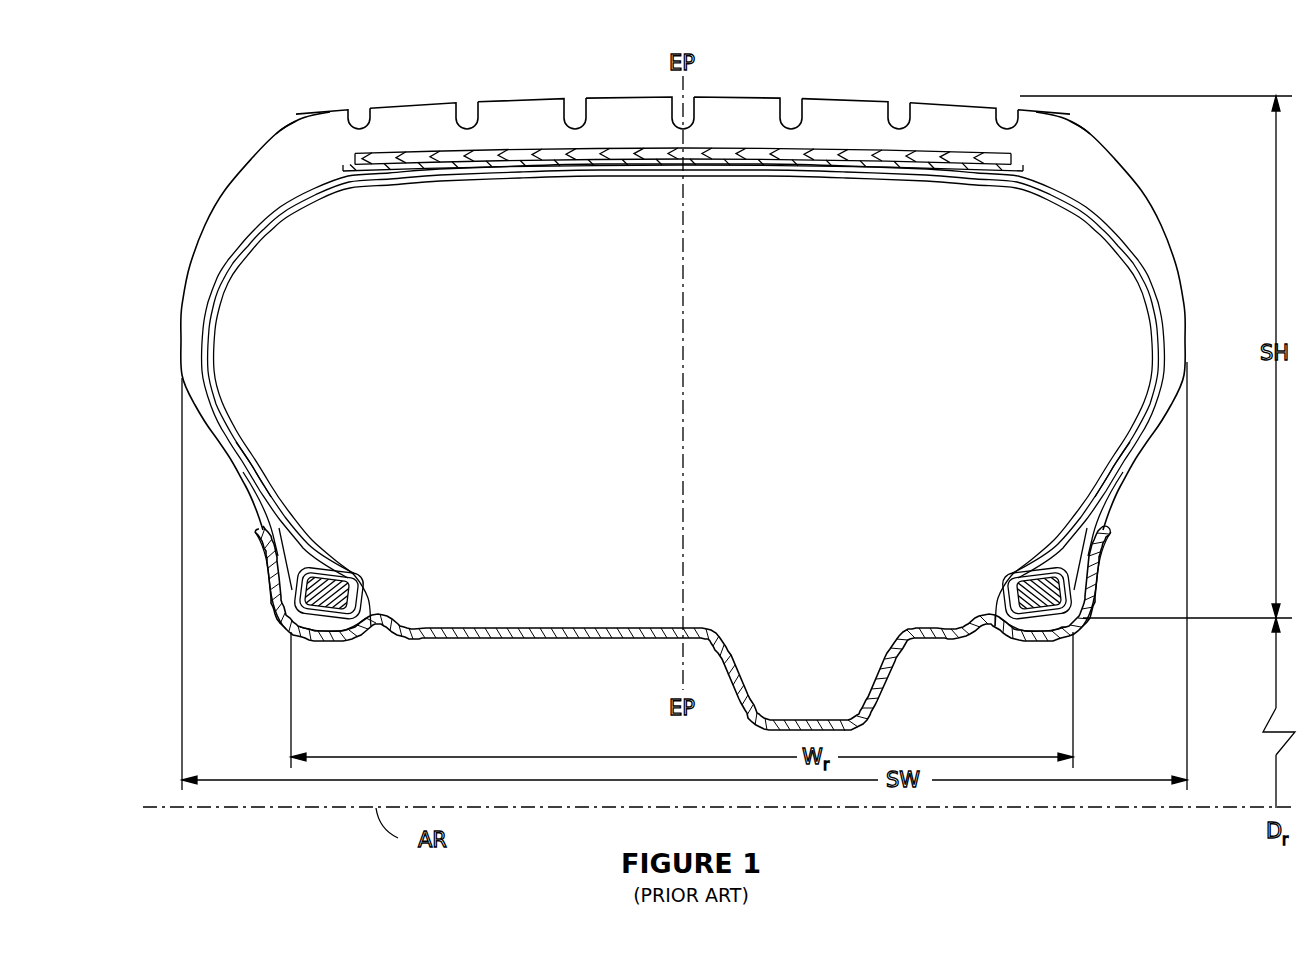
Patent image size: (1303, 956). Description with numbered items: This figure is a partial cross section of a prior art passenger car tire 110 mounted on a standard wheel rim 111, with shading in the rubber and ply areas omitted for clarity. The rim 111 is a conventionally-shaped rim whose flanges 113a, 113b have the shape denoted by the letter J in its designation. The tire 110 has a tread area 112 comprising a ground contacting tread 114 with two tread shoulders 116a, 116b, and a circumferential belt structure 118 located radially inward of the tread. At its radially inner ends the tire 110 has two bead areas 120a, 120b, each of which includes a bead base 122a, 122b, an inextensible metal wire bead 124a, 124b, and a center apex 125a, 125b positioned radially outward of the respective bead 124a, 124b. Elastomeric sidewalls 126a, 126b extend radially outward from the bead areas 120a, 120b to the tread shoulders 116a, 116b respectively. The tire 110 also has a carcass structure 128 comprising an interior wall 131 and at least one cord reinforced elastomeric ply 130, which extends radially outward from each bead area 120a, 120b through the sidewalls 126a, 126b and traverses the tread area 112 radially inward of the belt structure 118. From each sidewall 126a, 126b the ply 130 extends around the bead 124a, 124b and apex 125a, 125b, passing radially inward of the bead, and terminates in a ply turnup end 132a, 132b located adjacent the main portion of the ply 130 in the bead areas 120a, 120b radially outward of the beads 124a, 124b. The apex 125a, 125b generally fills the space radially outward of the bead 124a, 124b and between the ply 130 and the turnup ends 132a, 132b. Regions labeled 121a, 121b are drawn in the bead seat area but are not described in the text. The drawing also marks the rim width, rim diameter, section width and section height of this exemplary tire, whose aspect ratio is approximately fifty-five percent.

The prior art tire 110 is at (1180, 158).
The wheel rim 111 is at (632, 615).
The tread area 112 is at (628, 84).
The flange 113a is at (277, 570).
The flange 113b is at (1088, 585).
The ground contacting tread 114 is at (846, 96).
The tread shoulder 116a is at (296, 118).
The tread shoulder 116b is at (1068, 112).
The circumferential belt structure 118 is at (568, 170).
The bead area 120a is at (345, 508).
The bead area 120b is at (1002, 526).
The bead seat 121a is at (315, 650).
The bead seat 121b is at (1048, 652).
The bead base 122a is at (342, 630).
The bead base 122b is at (1032, 628).
The inextensible metal wire bead 124a is at (338, 597).
The inextensible metal wire bead 124b is at (1027, 597).
The center apex 125a is at (293, 517).
The center apex 125b is at (1047, 547).
The elastomeric sidewall 126a is at (180, 332).
The elastomeric sidewall 126b is at (1186, 333).
The carcass structure 128 is at (288, 224).
The cord reinforced elastomeric ply 130 is at (216, 332).
The interior wall 131 is at (275, 471).
The ply turnup end 132a is at (243, 472).
The ply turnup end 132b is at (1122, 470).